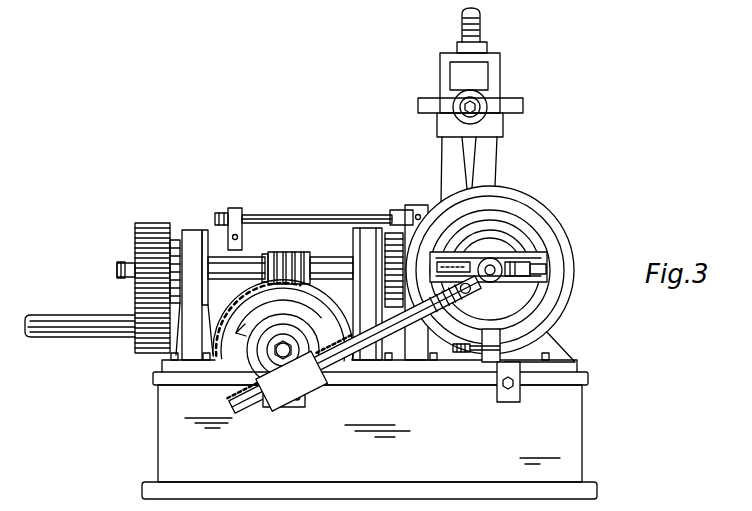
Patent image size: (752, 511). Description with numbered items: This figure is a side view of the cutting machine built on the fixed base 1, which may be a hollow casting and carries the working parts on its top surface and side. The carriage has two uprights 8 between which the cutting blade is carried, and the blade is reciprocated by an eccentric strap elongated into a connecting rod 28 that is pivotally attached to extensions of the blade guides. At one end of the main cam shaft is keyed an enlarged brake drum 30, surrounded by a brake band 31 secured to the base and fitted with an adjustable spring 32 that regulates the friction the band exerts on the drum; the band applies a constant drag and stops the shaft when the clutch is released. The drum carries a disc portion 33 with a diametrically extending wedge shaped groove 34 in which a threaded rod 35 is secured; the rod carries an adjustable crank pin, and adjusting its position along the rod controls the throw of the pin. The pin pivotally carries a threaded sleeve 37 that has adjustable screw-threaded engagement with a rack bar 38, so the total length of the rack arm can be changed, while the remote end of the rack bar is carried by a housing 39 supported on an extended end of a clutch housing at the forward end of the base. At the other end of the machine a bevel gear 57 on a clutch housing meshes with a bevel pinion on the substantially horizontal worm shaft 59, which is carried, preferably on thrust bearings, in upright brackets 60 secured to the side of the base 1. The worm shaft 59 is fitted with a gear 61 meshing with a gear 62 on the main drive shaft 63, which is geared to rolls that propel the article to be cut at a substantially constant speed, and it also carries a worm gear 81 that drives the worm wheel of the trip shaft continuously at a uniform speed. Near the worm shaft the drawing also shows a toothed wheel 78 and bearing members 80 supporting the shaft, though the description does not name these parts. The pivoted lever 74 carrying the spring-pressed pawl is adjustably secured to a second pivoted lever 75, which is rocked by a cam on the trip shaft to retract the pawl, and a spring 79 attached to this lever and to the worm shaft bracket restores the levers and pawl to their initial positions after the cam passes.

The fixed base 1 is at (562, 428).
The uprights 8 is at (492, 88).
The connecting rod 28 is at (482, 170).
The brake drum 30 is at (541, 295).
The brake band 31 is at (470, 340).
The adjustable spring 32 is at (462, 354).
The disc portion 33 is at (545, 283).
The wedge shaped groove 34 is at (545, 252).
The threaded rod 35 is at (463, 300).
The threaded sleeve 37 is at (432, 314).
The rack bar 38 is at (296, 381).
The housing 39 is at (280, 390).
The bevel gear 57 is at (545, 206).
The worm shaft 59 is at (322, 262).
The upright brackets 60 is at (165, 366).
The gear 61 is at (143, 249).
The gear 62 is at (138, 347).
The main drive shaft 63 is at (50, 326).
The pivoted lever 74 is at (416, 210).
The second pivoted lever 75 is at (233, 207).
The worm wheel 78 is at (233, 362).
The spring 79 is at (254, 254).
The bearing 80 is at (372, 228).
The worm gear 81 is at (292, 264).